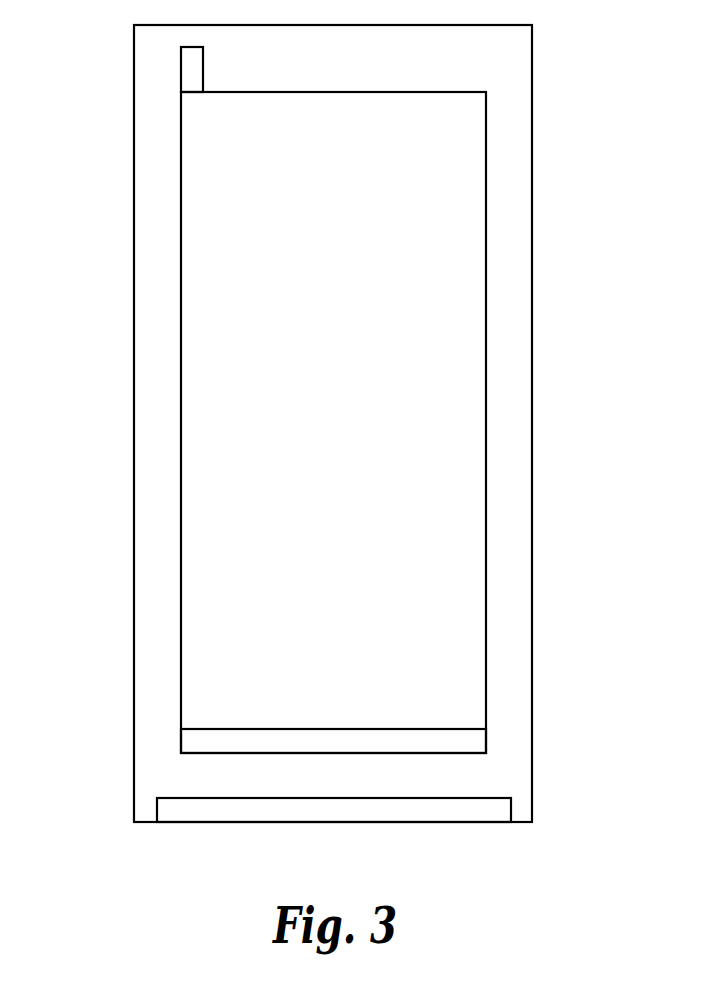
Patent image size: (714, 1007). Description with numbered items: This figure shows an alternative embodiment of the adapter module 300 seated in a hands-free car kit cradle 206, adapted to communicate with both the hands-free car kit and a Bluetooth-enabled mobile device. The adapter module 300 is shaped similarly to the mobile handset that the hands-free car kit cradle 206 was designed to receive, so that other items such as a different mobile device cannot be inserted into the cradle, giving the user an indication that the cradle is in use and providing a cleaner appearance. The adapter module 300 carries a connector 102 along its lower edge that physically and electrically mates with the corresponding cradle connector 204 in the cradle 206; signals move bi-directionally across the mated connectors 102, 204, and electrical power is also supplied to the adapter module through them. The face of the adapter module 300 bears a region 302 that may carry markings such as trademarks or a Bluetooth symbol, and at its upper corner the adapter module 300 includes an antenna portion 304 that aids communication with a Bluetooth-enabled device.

The connector 102 is at (486, 742).
The cradle connector 204 is at (157, 814).
The hands-free car kit cradle 206 is at (532, 68).
The adapter module 300 is at (486, 485).
The active area 302 is at (333, 411).
The antenna portion 304 is at (181, 70).